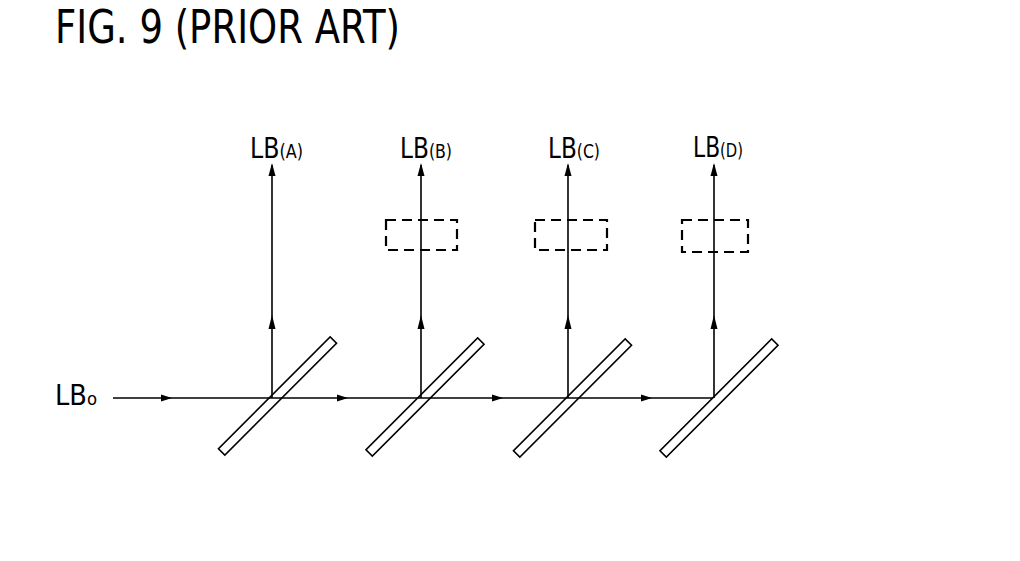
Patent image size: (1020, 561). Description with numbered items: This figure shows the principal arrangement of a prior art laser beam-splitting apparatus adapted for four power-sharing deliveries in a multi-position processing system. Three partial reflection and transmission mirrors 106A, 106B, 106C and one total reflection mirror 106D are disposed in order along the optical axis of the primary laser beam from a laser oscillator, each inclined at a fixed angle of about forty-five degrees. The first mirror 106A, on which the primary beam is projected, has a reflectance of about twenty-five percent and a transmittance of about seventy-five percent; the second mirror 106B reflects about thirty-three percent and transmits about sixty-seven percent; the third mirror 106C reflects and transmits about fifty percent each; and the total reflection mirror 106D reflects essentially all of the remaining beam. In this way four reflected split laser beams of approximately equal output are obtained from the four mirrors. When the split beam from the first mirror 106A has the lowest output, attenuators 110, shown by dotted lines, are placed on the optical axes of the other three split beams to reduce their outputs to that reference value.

The first stage partial reflection and transmission mirror 106A is at (235, 443).
The second partial reflection and transmission mirror 106B is at (388, 440).
The third partial reflection and transmission mirror 106C is at (540, 440).
The total reflection mirror 106D is at (688, 437).
The attenuator 110 is at (448, 220).